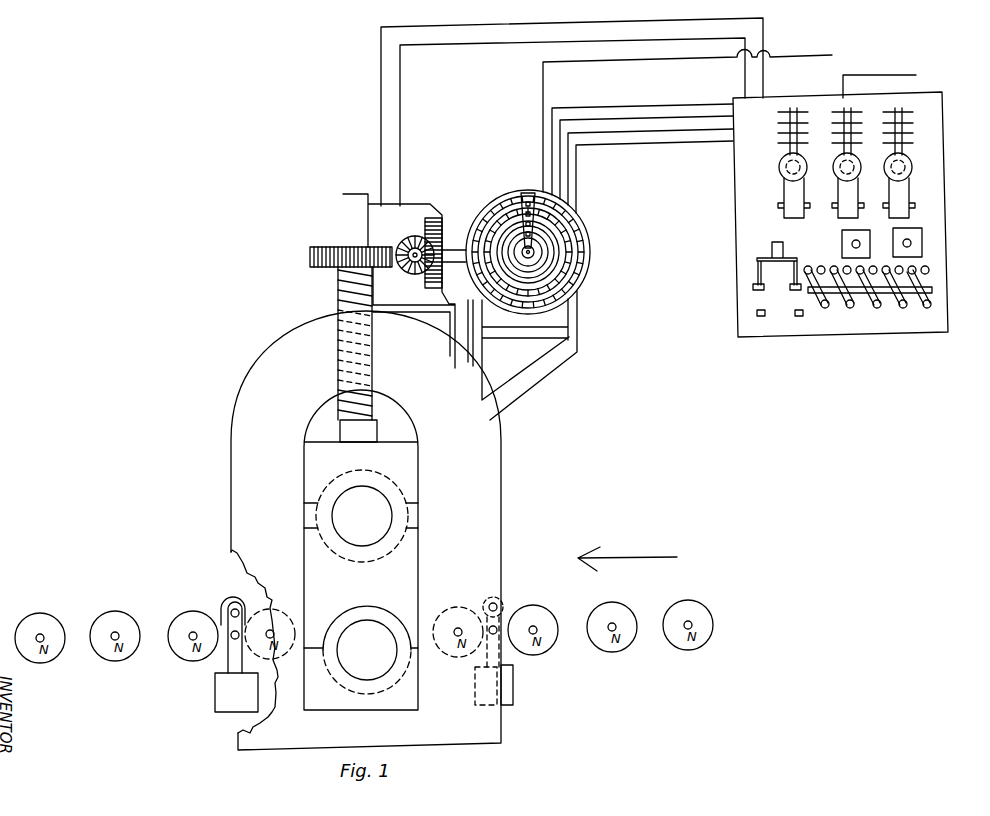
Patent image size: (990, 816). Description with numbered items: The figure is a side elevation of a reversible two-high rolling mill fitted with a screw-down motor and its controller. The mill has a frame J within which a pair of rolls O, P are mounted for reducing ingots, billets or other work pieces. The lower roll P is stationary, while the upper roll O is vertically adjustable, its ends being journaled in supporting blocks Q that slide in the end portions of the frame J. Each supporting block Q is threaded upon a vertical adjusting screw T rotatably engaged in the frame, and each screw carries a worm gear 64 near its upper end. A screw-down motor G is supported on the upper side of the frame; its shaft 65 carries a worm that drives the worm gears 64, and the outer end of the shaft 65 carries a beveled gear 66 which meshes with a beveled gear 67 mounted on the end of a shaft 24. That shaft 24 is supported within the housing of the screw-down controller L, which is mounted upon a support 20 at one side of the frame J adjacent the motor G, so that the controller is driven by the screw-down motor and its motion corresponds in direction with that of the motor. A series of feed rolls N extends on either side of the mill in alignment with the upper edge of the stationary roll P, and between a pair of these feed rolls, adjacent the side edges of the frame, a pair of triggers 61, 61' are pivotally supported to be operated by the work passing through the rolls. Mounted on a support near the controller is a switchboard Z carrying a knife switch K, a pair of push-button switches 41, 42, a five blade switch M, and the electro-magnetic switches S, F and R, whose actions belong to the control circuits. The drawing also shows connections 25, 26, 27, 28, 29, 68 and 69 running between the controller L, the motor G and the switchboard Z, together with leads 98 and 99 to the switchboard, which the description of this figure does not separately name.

The support 20 is at (583, 305).
The shaft 24 is at (457, 240).
The conductor wire 25 is at (547, 77).
The conductor wire 26 is at (604, 107).
The conductor wire 27 is at (647, 119).
The conductor wire 28 is at (569, 167).
The conductor wire 29 is at (578, 196).
The push-button switch 41 is at (838, 243).
The push-button switch 42 is at (936, 244).
The trigger 61 is at (217, 654).
The trigger 61' is at (527, 651).
The worm gear 64 is at (308, 258).
The shaft 65 is at (400, 271).
The beveled gear 66 is at (417, 275).
The beveled gear 67 is at (437, 209).
The conductor wire 68 is at (402, 117).
The conductor wire 69 is at (379, 117).
The negative lead 98 is at (835, 53).
The positive lead 99 is at (904, 78).
The screw-down motor G is at (412, 243).
The vertical adjusting screw T is at (378, 345).
The supporting block Q is at (398, 468).
The frame J is at (500, 497).
The screw-down controller L is at (592, 247).
The switchboard Z is at (946, 165).
The electro-magnetic switch S is at (790, 163).
The electro-magnetic switch F is at (845, 163).
The electro-magnetic switch R is at (896, 163).
The knife switch K is at (778, 279).
The five blade switch M is at (859, 308).
The upper roll O is at (361, 516).
The stationary roll P is at (361, 650).
The feed rolls N is at (364, 631).